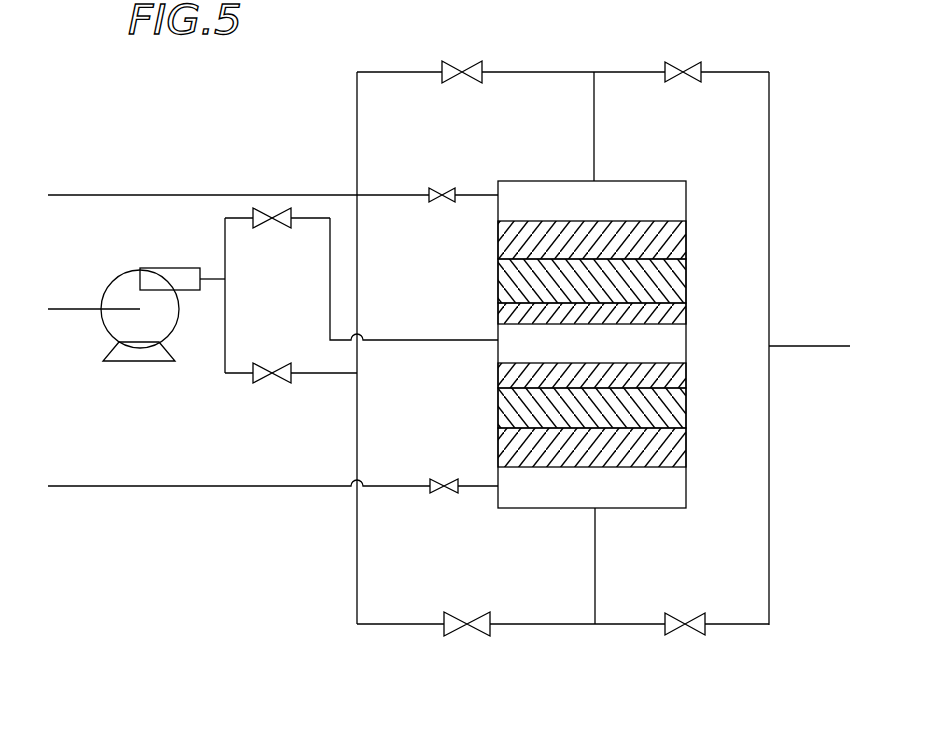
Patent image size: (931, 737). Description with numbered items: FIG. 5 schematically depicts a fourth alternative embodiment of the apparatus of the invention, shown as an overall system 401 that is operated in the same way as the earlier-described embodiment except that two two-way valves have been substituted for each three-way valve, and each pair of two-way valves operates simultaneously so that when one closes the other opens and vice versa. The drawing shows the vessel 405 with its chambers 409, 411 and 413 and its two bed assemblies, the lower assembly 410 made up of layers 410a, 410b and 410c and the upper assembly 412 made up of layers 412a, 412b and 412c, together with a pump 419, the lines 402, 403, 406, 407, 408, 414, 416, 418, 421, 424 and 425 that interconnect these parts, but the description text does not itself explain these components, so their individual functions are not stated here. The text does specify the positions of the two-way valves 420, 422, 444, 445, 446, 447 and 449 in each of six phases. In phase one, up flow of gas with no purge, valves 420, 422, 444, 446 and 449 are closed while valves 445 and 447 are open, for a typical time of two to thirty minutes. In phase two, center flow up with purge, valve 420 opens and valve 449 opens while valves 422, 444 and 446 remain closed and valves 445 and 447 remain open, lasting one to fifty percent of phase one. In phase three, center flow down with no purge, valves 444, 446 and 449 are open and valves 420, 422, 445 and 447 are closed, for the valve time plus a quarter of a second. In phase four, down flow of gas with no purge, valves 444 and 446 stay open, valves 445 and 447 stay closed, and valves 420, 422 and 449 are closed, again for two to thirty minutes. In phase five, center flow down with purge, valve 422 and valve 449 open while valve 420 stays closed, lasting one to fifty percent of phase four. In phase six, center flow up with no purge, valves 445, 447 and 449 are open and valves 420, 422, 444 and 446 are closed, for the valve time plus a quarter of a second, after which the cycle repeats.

The treatment system 401 is at (258, 133).
The fluid inlet line 402 is at (78, 312).
The pump circuit branch 403 is at (238, 216).
The vessel 405 is at (527, 510).
The pump return line 406 is at (235, 374).
The manifold line 407 is at (358, 152).
The bypass line / valve 408 is at (279, 384).
The lower chamber 409 is at (680, 490).
The lower bed assembly 410 is at (571, 406).
The lower bed layer a 410a is at (498, 446).
The lower bed layer b 410b is at (498, 410).
The lower bed layer c 410c is at (498, 375).
The middle chamber 411 is at (683, 343).
The upper bed assembly 412 is at (568, 277).
The upper bed layer a 412a is at (498, 238).
The upper bed layer b 412b is at (498, 285).
The upper bed layer c 412c is at (498, 316).
The upper chamber 413 is at (678, 205).
The top connecting line 414 is at (598, 144).
The return line 416 is at (770, 212).
The outlet line 418 is at (797, 348).
The pump 419 is at (148, 268).
The two-way valve 420 is at (440, 495).
The pump discharge line 421 is at (313, 222).
The two-way valve 422 is at (447, 186).
The pump connection line 424 is at (208, 280).
The feed line 425 is at (112, 195).
The two-way valve 444 is at (450, 62).
The two-way valve 445 is at (683, 66).
The two-way valve 446 is at (700, 636).
The two-way valve 447 is at (458, 633).
The two-way valve 449 is at (278, 208).